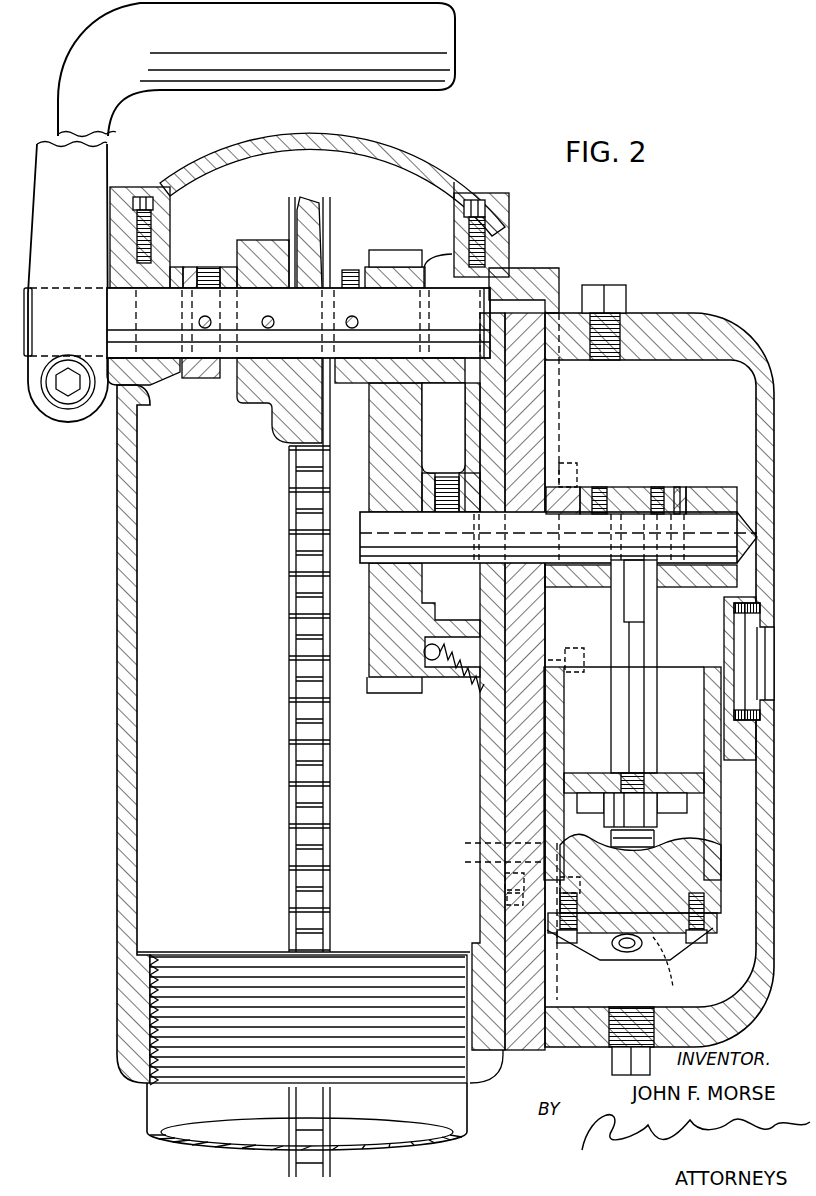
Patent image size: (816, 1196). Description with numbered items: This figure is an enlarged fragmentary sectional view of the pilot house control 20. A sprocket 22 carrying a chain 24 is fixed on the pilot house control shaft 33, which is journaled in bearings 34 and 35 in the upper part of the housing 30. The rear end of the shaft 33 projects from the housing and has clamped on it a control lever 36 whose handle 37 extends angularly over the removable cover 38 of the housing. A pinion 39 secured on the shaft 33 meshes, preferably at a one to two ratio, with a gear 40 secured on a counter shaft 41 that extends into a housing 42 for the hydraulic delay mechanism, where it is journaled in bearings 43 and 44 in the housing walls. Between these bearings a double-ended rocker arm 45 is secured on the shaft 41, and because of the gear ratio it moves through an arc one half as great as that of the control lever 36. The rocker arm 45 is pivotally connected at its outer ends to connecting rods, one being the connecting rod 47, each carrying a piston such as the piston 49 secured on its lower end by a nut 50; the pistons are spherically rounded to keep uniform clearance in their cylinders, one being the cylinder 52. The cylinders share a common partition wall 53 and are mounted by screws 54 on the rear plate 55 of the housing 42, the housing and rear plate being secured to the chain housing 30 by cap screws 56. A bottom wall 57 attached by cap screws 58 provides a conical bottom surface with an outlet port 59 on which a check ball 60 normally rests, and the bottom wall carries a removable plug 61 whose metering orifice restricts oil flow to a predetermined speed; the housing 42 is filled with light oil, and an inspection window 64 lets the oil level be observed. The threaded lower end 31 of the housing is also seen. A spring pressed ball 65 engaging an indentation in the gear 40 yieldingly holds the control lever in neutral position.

The housing 20 is at (772, 382).
The sprocket 22 is at (284, 412).
The chain 24 is at (290, 557).
The housing 30 is at (122, 575).
The threaded sleeve 31 is at (467, 1115).
The pilot house control shaft 33 is at (227, 368).
The bearing 34 is at (465, 386).
The bearing 35 is at (181, 375).
The control lever 36 is at (85, 188).
The handle 37 is at (440, 43).
The removable cover 38 is at (410, 153).
The pinion 39 is at (379, 263).
The gear 40 is at (395, 672).
The counter shaft 41 is at (360, 522).
The housing 42 is at (736, 338).
The bearing 43 is at (548, 484).
The bearing 44 is at (696, 503).
The double-ended rocker arm 45 is at (626, 490).
The connecting rod 47 is at (646, 645).
The piston 49 is at (701, 790).
The nut 50 is at (652, 810).
The cylinder 52 is at (716, 828).
The partition wall 53 is at (710, 885).
The screws 54 is at (574, 687).
The rear plate 55 is at (509, 1046).
The cap screws 56 is at (560, 289).
The bottom wall 57 is at (707, 936).
The cap screws 58 is at (566, 946).
The outlet port 59 is at (624, 937).
The check ball 60 is at (679, 969).
The removable plug 61 is at (629, 953).
The inspection window 64 is at (777, 650).
The spring pressed ball 65 is at (425, 668).